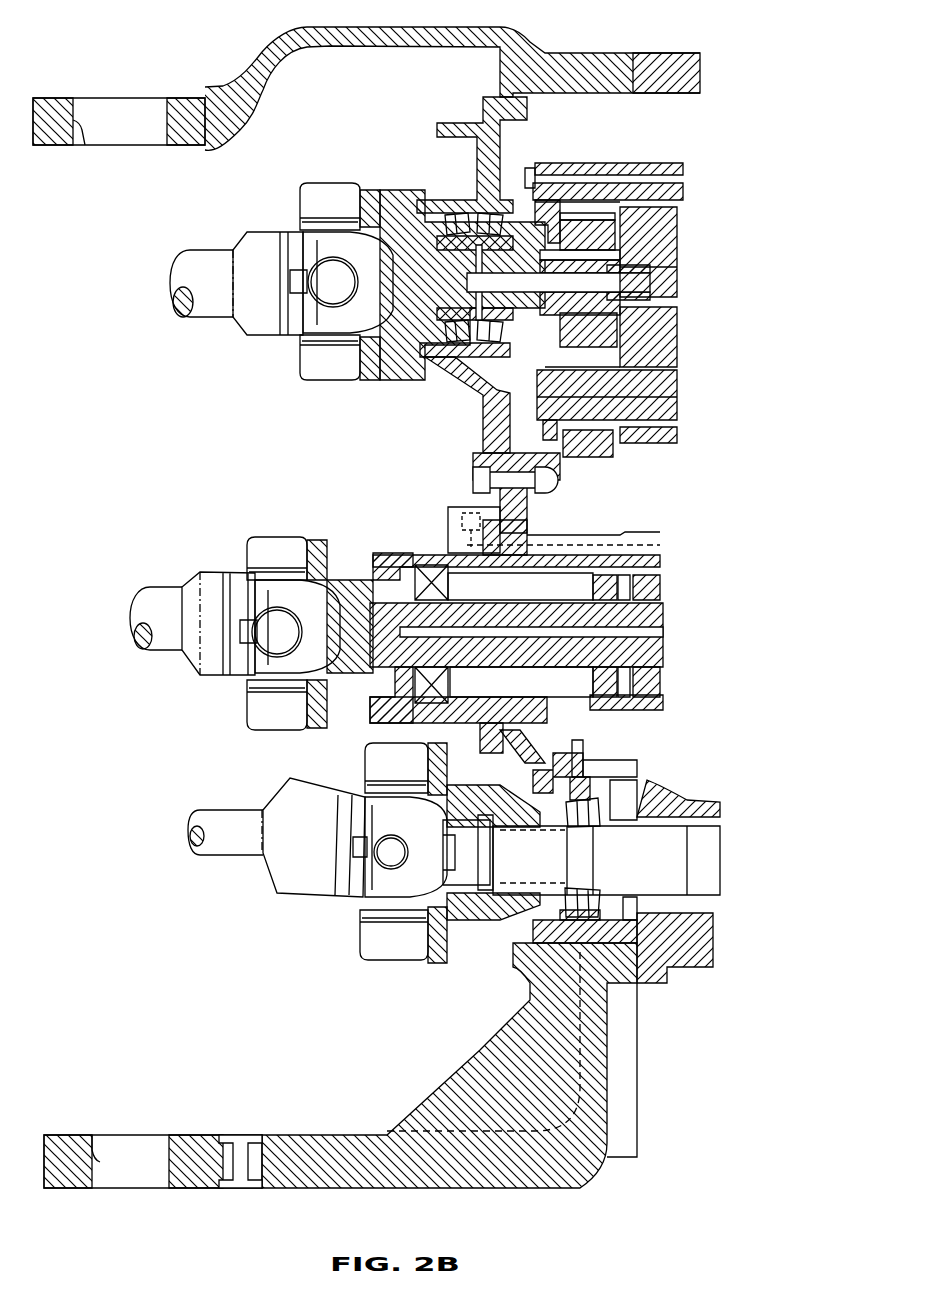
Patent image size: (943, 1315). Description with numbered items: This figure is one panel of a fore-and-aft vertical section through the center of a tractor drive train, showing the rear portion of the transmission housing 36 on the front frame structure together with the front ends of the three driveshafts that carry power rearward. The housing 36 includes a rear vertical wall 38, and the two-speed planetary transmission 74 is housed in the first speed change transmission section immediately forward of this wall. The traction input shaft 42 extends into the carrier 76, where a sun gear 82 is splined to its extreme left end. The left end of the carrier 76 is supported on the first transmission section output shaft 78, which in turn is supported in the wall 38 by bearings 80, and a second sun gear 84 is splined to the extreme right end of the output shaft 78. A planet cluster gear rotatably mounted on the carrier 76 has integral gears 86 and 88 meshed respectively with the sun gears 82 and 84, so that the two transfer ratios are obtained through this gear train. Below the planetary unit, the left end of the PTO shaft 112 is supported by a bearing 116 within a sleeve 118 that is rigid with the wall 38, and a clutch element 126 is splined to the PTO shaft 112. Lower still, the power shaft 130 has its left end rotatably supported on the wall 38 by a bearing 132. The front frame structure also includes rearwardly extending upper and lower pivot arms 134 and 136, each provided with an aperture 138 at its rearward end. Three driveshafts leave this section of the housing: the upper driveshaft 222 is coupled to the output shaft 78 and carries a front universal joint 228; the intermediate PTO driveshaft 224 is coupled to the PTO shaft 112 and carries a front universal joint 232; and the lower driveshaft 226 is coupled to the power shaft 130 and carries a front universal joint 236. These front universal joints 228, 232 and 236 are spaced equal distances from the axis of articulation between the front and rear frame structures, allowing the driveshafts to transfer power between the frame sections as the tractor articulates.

The transmission housing 36 is at (609, 62).
The rear vertical wall 38 is at (490, 162).
The traction input shaft 42 is at (667, 292).
The planetary transmission 74 is at (627, 148).
The carrier 76 is at (672, 165).
The first transmission section output shaft 78 is at (410, 327).
The bearings 80 is at (478, 215).
The sun gear 82 is at (663, 228).
The sun gear 84 is at (583, 227).
The planet cluster gear 86 is at (655, 442).
The planet cluster gear 88 is at (605, 442).
The PTO shaft 112 is at (652, 646).
The bearing 116 is at (443, 586).
The sleeve 118 is at (512, 567).
The clutch element 126 is at (650, 588).
The power shaft 130 is at (723, 864).
The bearing 132 is at (597, 823).
The upper pivot arm 134 is at (340, 30).
The lower pivot arm 136 is at (312, 1137).
The apertures 138 is at (80, 128).
The upper driveshaft 222 is at (210, 312).
The intermediate PTO driveshaft 224 is at (157, 590).
The lower driveshaft 226 is at (207, 806).
The front universal joint 228 is at (340, 366).
The front universal joint 232 is at (278, 717).
The front universal joint 236 is at (383, 947).